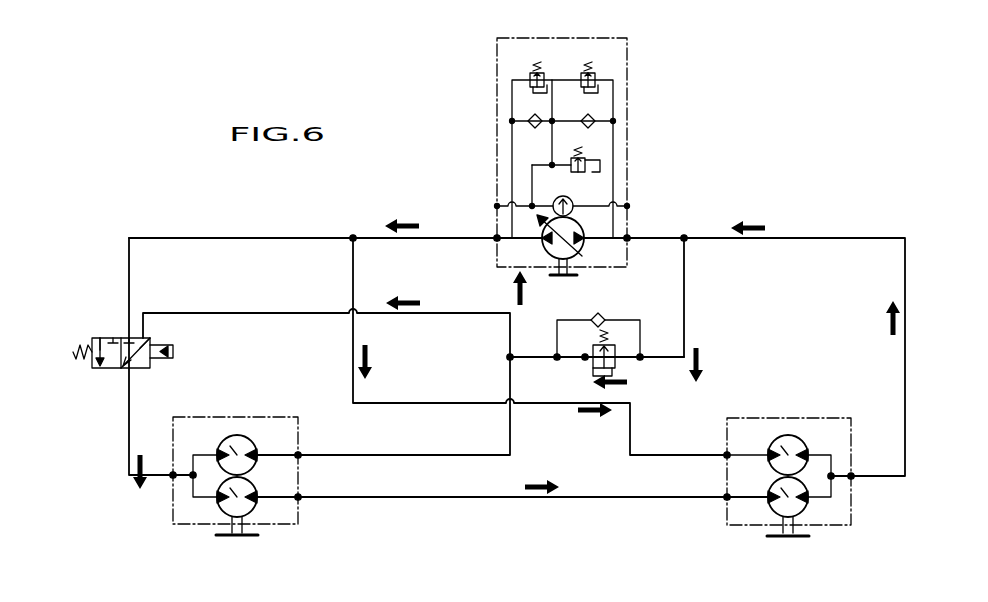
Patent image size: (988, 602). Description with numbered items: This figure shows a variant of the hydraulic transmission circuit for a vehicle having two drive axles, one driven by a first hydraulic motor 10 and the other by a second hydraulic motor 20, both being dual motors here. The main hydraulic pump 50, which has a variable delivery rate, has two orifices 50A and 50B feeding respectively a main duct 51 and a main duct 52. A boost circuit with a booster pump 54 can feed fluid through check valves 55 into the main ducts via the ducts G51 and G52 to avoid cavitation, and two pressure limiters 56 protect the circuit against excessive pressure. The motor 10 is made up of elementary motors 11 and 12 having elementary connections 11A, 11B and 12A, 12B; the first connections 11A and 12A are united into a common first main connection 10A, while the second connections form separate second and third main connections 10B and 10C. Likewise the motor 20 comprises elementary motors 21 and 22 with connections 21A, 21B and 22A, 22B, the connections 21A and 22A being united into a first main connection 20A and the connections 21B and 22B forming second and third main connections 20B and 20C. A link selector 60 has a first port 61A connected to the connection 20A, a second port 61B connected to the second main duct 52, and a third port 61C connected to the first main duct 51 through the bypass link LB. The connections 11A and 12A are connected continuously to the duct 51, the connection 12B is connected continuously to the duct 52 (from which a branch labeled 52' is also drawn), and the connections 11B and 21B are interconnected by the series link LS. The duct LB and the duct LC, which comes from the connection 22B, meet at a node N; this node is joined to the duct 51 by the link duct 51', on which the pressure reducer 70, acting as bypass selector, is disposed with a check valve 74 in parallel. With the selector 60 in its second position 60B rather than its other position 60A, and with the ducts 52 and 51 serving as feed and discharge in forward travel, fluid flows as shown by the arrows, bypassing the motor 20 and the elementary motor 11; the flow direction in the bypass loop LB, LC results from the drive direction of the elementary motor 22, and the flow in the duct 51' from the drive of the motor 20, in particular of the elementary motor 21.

The first hydraulic motor 10 is at (840, 416).
The first main connection 10A is at (852, 478).
The second main connection 10B is at (726, 498).
The third main connection 10C is at (726, 455).
The elementary motor 11 is at (788, 518).
The first elementary connection 11A is at (807, 501).
The second elementary connection 11B is at (769, 501).
The elementary motor 12 is at (790, 450).
The first elementary connection 12A is at (806, 452).
The second elementary connection 12B is at (770, 452).
The second hydraulic motor 20 is at (173, 524).
The first main connection 20A is at (190, 477).
The second main connection 20B is at (298, 499).
The third main connection 20C is at (298, 454).
The first elementary motor 21 is at (237, 518).
The first elementary connection 21A is at (220, 501).
The second elementary connection 21B is at (255, 501).
The second elementary motor 22 is at (237, 450).
The first elementary connection 22A is at (219, 452).
The second elementary connection 22B is at (256, 453).
The main hydraulic pump 50 is at (549, 258).
The pump orifice 50A is at (590, 247).
The pump orifice 50B is at (539, 258).
The first main duct 51 is at (744, 336).
The link duct 51' is at (711, 310).
The second main duct 52 is at (335, 213).
The branch line 52' is at (540, 346).
The booster pump 54 is at (573, 203).
The check valves 55 is at (592, 117).
The pressure limiters 56 is at (592, 72).
The link selector 60 is at (92, 368).
The spring of switching valve 60A is at (88, 345).
The second position 60B is at (166, 350).
The first port 61A is at (125, 366).
The second port 61B is at (104, 338).
The third port 61C is at (140, 340).
The pressure reducer 70 is at (620, 363).
The check valve 74 is at (600, 318).
The boost duct G51 is at (615, 141).
The boost duct G52 is at (512, 143).
The bypass link LB is at (350, 312).
The duct LC is at (386, 455).
The series link LS is at (410, 497).
The node N is at (510, 357).